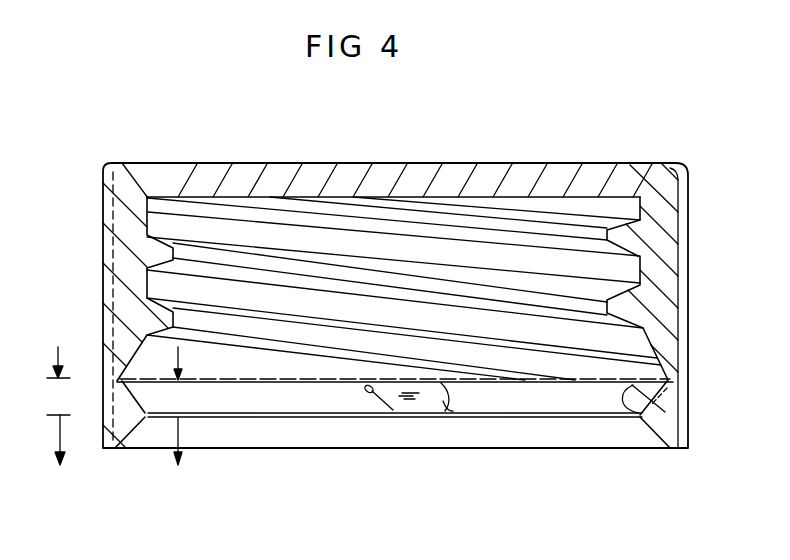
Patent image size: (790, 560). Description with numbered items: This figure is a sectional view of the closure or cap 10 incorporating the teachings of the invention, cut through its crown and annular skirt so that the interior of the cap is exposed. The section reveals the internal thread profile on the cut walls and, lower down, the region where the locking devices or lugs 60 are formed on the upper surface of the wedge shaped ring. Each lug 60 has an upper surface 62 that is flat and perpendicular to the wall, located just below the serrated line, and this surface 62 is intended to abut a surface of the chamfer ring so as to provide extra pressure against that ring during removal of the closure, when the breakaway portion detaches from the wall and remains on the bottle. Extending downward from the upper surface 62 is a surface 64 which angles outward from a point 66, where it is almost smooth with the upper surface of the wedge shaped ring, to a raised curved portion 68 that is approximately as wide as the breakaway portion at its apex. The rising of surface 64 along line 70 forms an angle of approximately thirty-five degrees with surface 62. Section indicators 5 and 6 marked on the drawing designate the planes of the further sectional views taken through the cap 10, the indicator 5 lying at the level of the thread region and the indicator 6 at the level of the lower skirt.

The closure or cap 10 is at (277, 153).
The upper surface 62 is at (398, 379).
The point 66 is at (367, 393).
The line 70 is at (389, 403).
The locking devices or lugs 60 is at (424, 406).
The surface 64 is at (443, 404).
The raised curved portion 68 is at (442, 385).
The section line 5- 5 is at (110, 360).
The section line 6- 6 is at (113, 448).